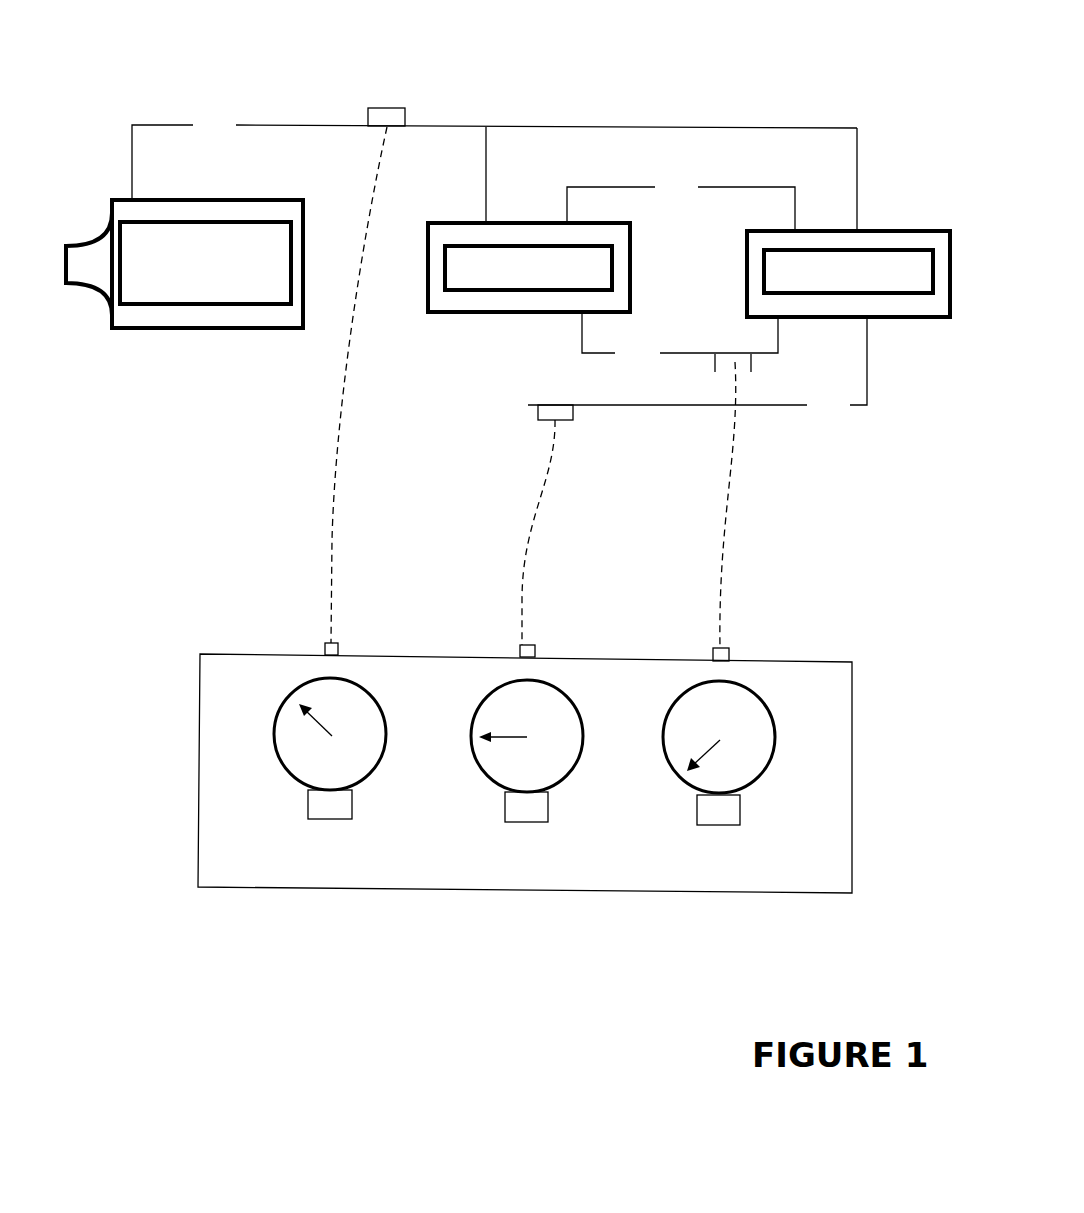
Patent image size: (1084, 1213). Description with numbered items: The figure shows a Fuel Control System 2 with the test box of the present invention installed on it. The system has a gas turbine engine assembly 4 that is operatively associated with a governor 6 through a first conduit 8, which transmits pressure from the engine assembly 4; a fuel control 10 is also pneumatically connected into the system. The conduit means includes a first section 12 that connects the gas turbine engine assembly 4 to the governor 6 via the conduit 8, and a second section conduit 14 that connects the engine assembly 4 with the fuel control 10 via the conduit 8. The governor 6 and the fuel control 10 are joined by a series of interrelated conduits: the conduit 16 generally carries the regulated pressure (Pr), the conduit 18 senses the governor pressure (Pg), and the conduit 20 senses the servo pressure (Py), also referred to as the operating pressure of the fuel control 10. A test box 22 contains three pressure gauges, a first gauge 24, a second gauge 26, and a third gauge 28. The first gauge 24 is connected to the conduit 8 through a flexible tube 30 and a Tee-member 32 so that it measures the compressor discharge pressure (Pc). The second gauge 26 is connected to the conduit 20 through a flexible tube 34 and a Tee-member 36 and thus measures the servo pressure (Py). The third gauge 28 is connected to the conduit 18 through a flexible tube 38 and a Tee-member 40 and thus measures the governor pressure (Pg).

The Fuel Control System 2 is at (213, 40).
The gas turbine engine assembly 4 is at (184, 264).
The governor 6 is at (529, 267).
The first conduit 8 is at (280, 125).
The fuel control 10 is at (848, 274).
The first section 12 is at (486, 172).
The second section conduit 14 is at (857, 185).
The conduit 16 is at (610, 187).
The conduit 18 is at (683, 353).
The conduit 20 is at (688, 405).
The test box 22 is at (478, 920).
The first gauge 24 is at (330, 764).
The second gauge 26 is at (527, 766).
The third gauge 28 is at (719, 768).
The flexible tube 30 is at (332, 540).
The Tee-member 32 is at (390, 117).
The flexible tube 34 is at (524, 552).
The Tee-member 36 is at (553, 420).
The flexible tube 38 is at (720, 548).
The Tee-member 40 is at (735, 362).